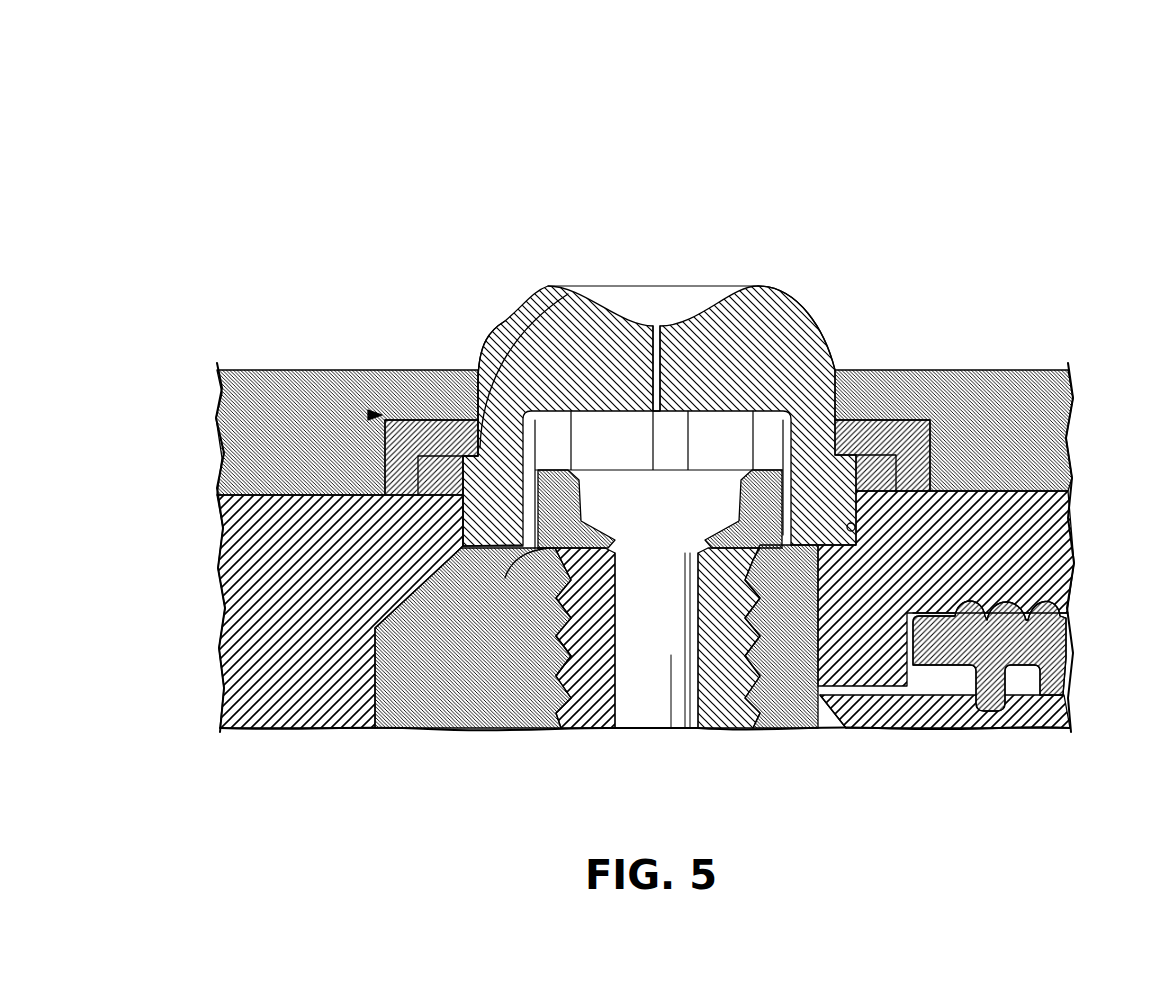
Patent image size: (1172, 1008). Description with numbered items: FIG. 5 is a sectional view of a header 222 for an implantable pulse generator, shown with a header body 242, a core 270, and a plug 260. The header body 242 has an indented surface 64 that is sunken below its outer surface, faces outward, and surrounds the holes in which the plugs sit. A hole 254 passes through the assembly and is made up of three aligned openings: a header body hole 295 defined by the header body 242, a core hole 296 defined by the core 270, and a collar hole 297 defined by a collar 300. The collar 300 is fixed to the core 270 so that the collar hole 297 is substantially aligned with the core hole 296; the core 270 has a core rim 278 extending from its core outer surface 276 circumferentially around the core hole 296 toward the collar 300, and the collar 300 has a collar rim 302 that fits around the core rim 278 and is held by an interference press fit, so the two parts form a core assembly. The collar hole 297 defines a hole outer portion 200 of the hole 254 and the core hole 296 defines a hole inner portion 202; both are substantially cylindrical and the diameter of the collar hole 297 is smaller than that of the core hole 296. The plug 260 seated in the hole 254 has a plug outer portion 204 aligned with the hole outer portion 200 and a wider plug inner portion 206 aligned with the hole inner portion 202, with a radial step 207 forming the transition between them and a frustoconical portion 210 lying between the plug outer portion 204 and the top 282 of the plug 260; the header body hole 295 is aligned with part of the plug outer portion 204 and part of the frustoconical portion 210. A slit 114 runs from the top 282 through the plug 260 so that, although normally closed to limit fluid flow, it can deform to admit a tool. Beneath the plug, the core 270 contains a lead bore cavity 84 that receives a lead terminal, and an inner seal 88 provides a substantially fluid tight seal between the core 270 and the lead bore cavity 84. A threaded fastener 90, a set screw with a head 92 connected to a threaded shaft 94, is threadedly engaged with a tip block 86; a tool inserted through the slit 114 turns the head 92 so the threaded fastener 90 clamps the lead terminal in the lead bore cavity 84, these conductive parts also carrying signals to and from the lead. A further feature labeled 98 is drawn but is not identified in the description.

The header 222 is at (979, 167).
The plug 260 is at (535, 280).
The slit 114 is at (628, 316).
The top of the plug 282 is at (757, 277).
The collar hole 297 is at (512, 318).
The frustoconical portion 210 is at (827, 423).
The header body hole 295 is at (490, 315).
The indented surface 64 is at (253, 362).
The hole outer portion 200 is at (831, 360).
The hole 254 is at (481, 370).
The plug outer portion 204 is at (852, 412).
The radial step 207 is at (862, 447).
The header body 242 is at (1028, 398).
The collar 300 is at (366, 407).
The collar rim 302 is at (392, 465).
The core rim 278 is at (424, 473).
The core outer surface 276 is at (252, 483).
The core hole 296 is at (455, 490).
The plug inner portion 206 is at (852, 495).
The hole inner portion 202 is at (848, 520).
The inner seal 88 is at (1030, 634).
The core 270 is at (220, 645).
The lead bore cavity 84 is at (1025, 697).
The tip block 86 is at (425, 690).
The head 92 is at (497, 570).
The threaded shaft 94 is at (547, 637).
The gap 98 is at (883, 678).
The threaded fastener 90 is at (643, 682).